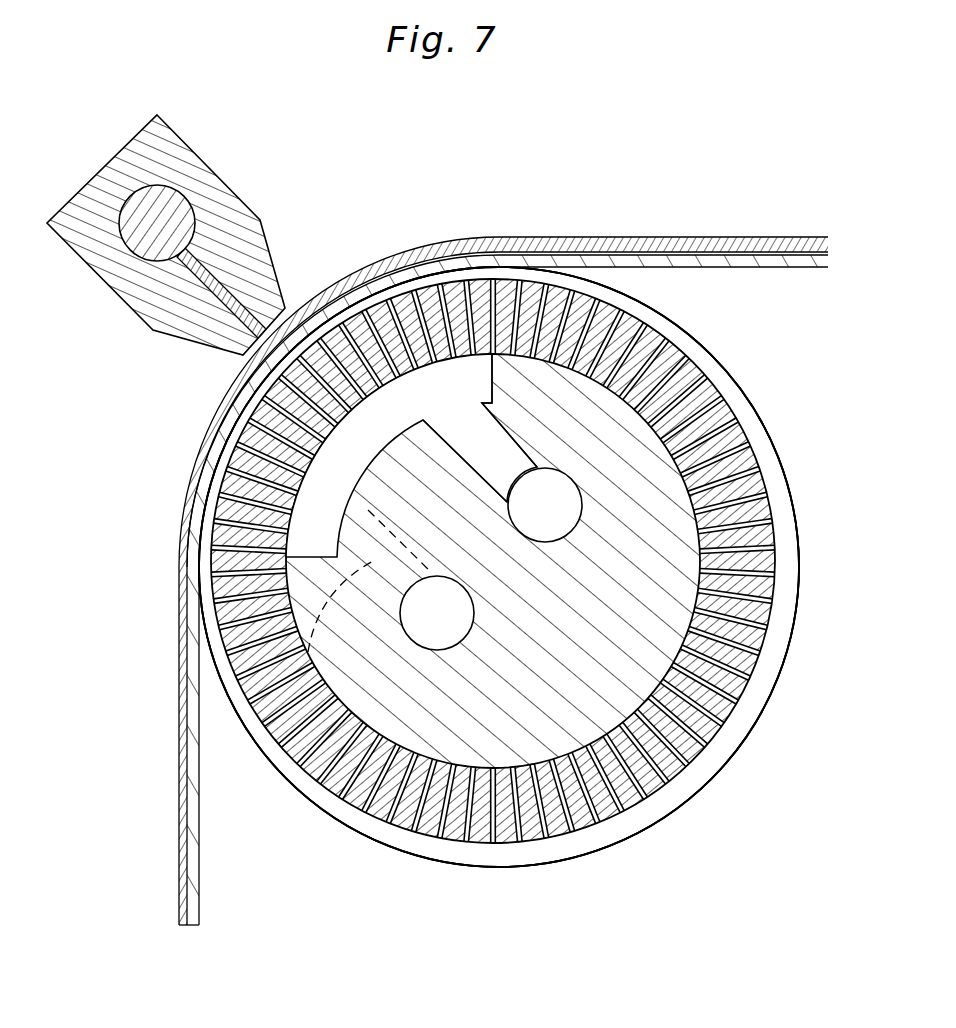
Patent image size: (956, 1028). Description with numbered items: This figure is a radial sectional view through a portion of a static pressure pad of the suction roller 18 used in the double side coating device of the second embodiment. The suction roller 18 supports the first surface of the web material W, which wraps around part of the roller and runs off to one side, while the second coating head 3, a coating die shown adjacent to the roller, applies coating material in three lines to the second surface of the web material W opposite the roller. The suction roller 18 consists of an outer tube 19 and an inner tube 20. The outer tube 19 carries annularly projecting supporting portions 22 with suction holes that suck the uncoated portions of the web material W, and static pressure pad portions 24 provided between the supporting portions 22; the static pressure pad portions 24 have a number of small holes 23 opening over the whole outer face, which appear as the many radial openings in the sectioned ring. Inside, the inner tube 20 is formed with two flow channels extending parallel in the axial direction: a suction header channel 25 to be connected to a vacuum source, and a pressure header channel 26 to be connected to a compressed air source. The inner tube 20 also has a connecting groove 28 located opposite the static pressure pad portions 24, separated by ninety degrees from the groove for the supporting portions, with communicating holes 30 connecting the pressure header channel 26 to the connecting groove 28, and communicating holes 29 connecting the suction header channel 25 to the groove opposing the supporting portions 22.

The second coating head 3 is at (205, 172).
The web material W is at (178, 690).
The suction roller 18 is at (488, 905).
The outer tube 19 is at (362, 845).
The inner tube 20 is at (675, 782).
The supporting portions 22 is at (575, 863).
The small holes 23 is at (623, 697).
The static pressure pad portions 24 is at (623, 817).
The suction header channel 25 is at (422, 628).
The pressure header channel 26 is at (530, 520).
The connecting groove 28 is at (343, 453).
The communicating holes 29 is at (292, 757).
The communicating holes 30 is at (475, 461).